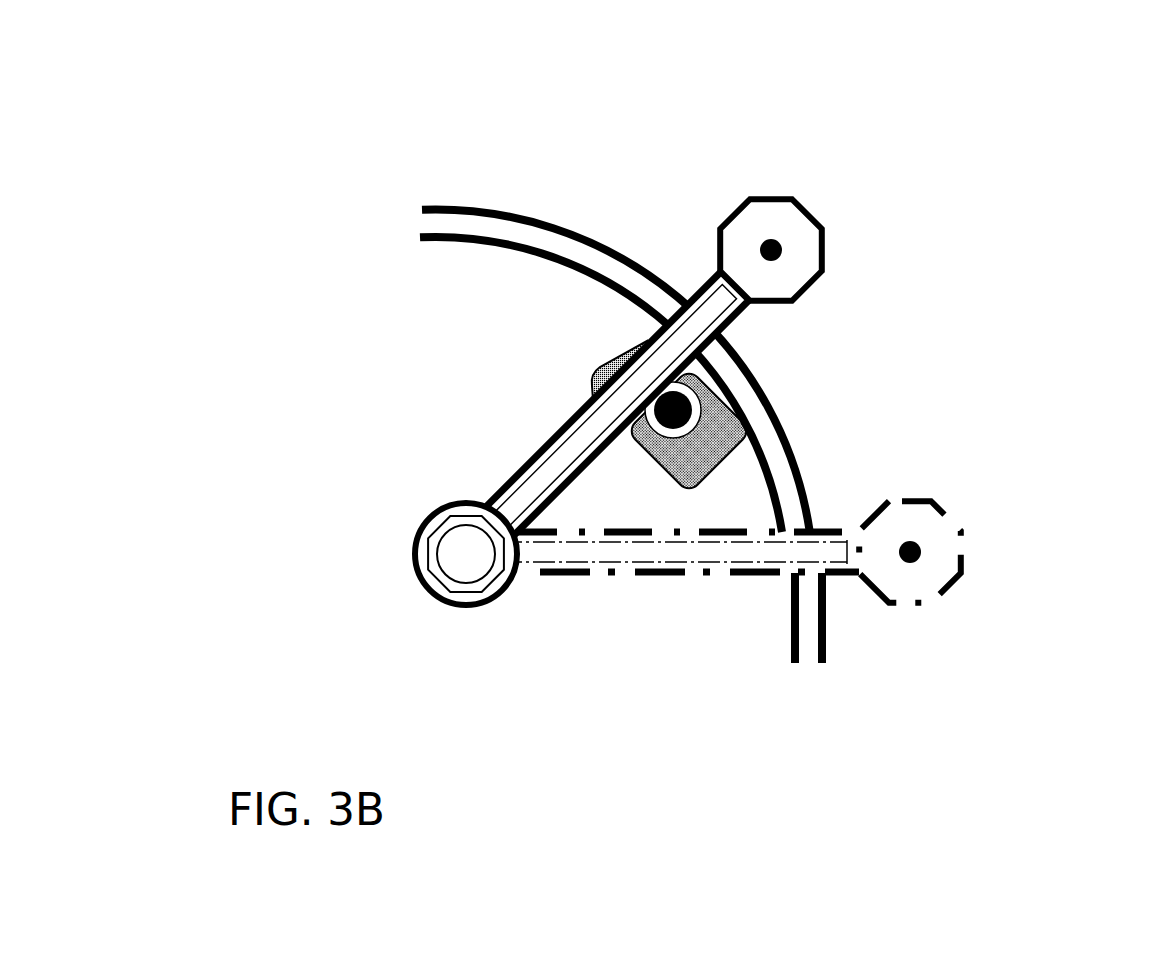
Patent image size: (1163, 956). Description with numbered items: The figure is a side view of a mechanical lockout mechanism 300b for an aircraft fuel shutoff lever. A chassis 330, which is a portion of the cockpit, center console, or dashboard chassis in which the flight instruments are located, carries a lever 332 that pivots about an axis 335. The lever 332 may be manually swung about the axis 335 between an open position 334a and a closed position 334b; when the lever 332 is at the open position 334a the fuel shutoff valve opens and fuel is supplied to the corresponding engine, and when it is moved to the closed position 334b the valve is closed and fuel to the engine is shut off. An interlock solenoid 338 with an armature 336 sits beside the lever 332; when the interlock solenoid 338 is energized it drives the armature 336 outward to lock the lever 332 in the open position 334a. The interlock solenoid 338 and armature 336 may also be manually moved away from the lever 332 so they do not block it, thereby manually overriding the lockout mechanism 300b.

The mechanical lockout mechanism 300b is at (1140, 77).
The chassis 330 is at (552, 216).
The lever 332 is at (694, 296).
The open position 334a is at (826, 208).
The closed position 334b is at (990, 525).
The axis 335 is at (426, 520).
The armature 336 is at (693, 398).
The interlock solenoid 338 is at (733, 438).